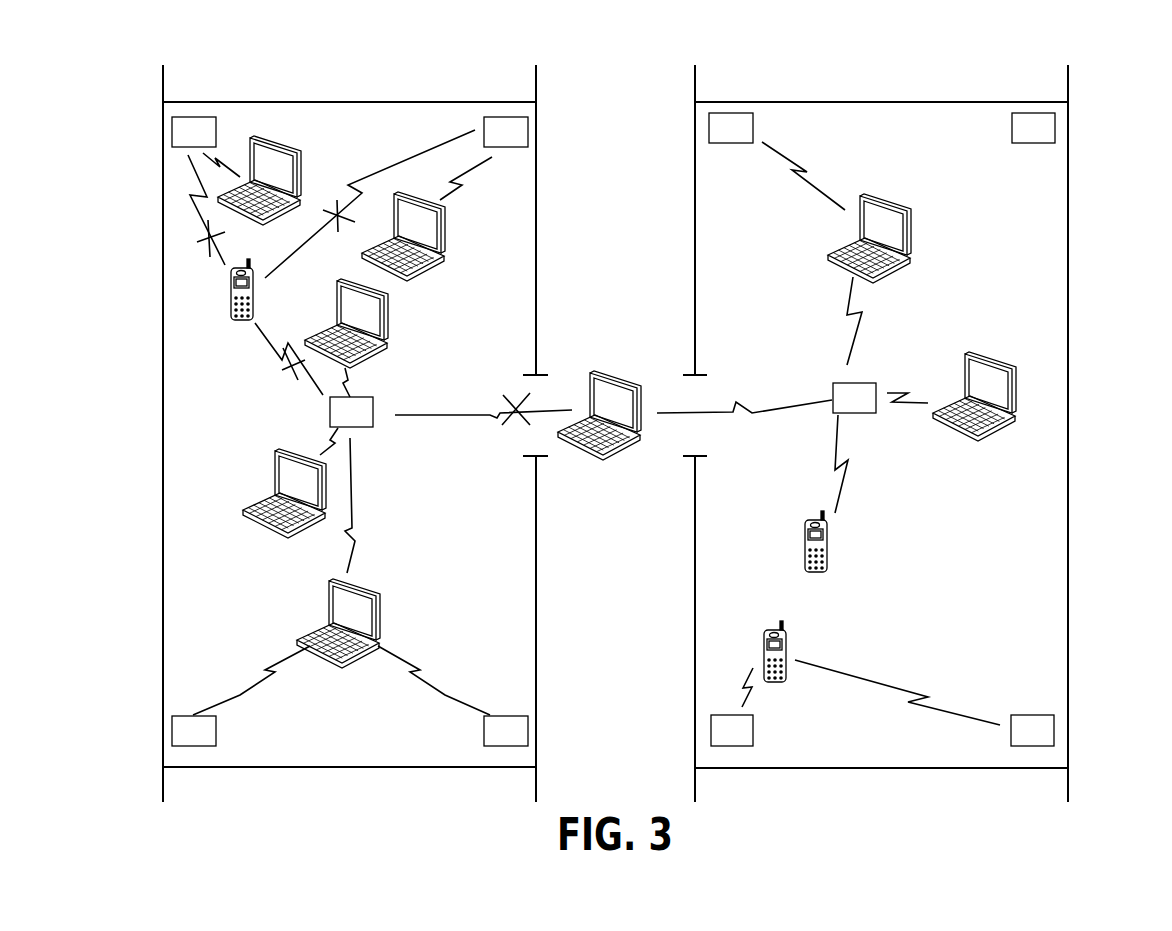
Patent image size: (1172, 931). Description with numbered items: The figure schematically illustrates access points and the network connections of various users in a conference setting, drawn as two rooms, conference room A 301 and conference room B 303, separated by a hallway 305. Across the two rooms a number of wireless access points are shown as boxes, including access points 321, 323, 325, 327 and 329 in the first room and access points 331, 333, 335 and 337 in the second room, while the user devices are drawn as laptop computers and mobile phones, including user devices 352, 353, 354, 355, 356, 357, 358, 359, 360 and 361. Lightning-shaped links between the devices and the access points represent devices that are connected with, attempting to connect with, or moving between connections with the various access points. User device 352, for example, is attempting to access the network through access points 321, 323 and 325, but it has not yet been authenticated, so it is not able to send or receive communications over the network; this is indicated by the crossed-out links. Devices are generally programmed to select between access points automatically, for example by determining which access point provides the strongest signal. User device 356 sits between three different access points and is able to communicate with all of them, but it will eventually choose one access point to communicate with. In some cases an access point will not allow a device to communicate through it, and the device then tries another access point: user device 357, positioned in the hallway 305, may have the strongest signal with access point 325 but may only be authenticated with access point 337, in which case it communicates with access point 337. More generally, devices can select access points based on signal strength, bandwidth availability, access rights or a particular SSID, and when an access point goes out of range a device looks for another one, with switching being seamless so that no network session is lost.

The conference room A 301 is at (163, 468).
The conference room B 303 is at (1070, 512).
The hallway 305 is at (602, 67).
The access point 321 is at (172, 130).
The access point 323 is at (528, 130).
The access point 325 is at (373, 400).
The access point 327 is at (193, 715).
The access point 329 is at (490, 715).
The access point 331 is at (712, 713).
The access point 333 is at (1015, 713).
The access point 335 is at (1030, 143).
The access point 337 is at (740, 143).
The user device 352 is at (230, 298).
The laptop computer 353 is at (440, 232).
The laptop computer 354 is at (383, 310).
The laptop computer 355 is at (270, 527).
The user device 356 is at (380, 613).
The user device 357 is at (607, 373).
The laptop computer 358 is at (900, 200).
The laptop computer 359 is at (980, 350).
The mobile phone 360 is at (827, 538).
The mobile phone 361 is at (787, 642).